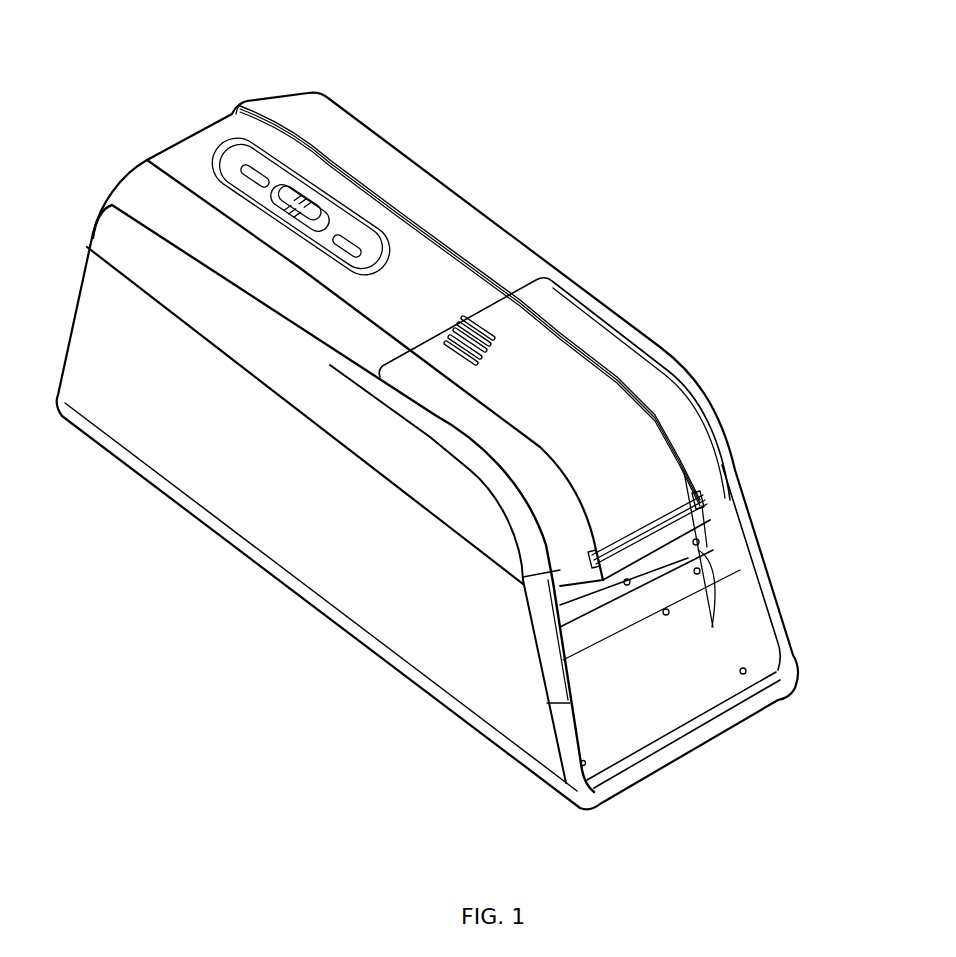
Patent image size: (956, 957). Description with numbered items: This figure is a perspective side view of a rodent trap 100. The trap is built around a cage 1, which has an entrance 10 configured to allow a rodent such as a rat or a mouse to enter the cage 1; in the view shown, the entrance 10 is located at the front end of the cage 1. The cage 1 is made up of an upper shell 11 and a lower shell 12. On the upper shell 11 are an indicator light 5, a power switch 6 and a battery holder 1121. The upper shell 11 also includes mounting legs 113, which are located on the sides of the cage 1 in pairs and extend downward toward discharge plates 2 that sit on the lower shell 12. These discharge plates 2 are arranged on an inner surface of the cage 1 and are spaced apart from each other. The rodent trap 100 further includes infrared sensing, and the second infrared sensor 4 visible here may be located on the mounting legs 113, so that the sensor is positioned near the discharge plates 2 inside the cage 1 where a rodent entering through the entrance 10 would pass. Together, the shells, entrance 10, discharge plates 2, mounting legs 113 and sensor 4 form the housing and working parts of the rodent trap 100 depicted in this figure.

The cage 1 is at (123, 70).
The upper shell 11 is at (147, 197).
The lower shell 12 is at (93, 283).
The indicator light 5 is at (256, 172).
The power switch 6 is at (297, 197).
The battery holder 1121 is at (550, 353).
The mounting legs 113 is at (720, 530).
The entrance 10 is at (750, 600).
The second infrared sensor 4 is at (742, 673).
The discharge plates 2 is at (576, 610).
The rodent trap 100 is at (248, 770).